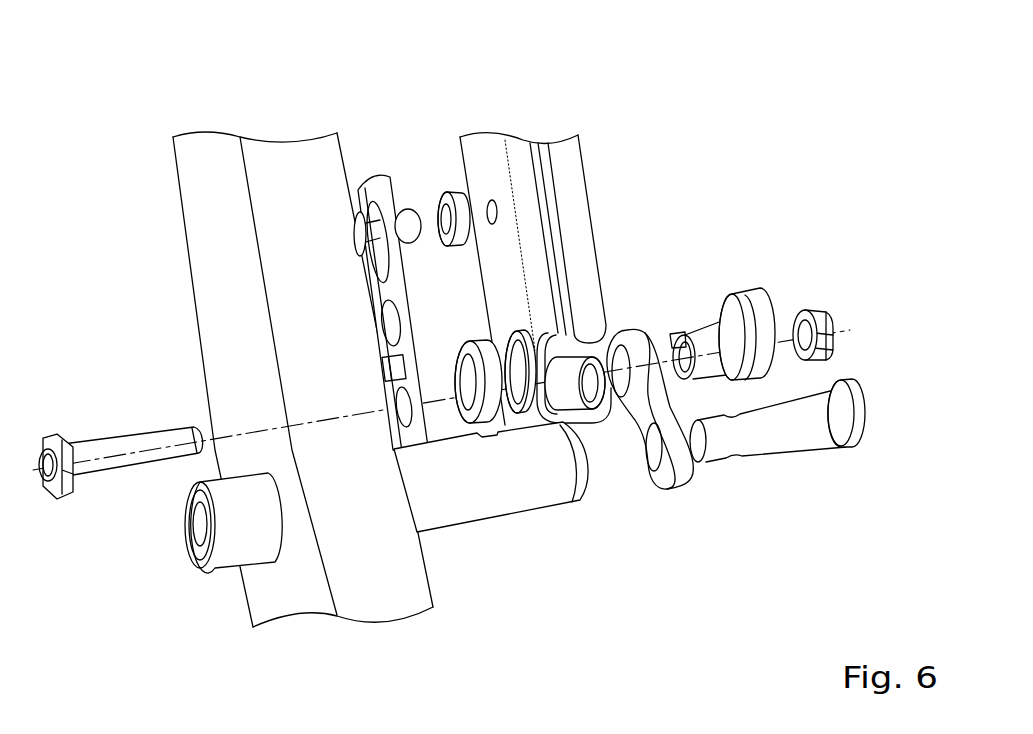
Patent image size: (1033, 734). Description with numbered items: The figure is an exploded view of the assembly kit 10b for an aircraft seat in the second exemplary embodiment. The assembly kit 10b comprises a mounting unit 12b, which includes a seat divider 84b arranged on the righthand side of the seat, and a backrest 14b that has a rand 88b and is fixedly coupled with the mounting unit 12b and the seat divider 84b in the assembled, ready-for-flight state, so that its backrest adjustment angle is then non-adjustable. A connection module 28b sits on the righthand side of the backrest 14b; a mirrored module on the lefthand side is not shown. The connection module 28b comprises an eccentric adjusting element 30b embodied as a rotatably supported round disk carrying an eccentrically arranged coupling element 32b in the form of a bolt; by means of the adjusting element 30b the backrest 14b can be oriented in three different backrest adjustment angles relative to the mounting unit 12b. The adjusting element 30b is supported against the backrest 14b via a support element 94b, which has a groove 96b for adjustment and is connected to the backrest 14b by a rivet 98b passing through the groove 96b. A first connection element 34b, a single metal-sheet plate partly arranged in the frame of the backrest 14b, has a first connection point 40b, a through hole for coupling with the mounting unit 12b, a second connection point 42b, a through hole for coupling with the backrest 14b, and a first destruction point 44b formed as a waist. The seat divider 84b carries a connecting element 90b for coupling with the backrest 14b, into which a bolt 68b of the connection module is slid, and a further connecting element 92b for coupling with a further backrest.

The assembly kit 10b is at (143, 100).
The mounting unit 12b is at (250, 339).
The backrest 14b is at (607, 279).
The connection module 28b is at (735, 360).
The adjusting element 30b is at (777, 317).
The coupling element 32b is at (131, 461).
The first connection element 34b is at (640, 471).
The first connection point 40b is at (649, 477).
The second connection point 42b is at (625, 395).
The first destruction point 44b is at (655, 401).
The bolt 68b is at (783, 432).
The seat divider 84b is at (221, 177).
The rand 88b is at (559, 347).
The connecting element 90b is at (480, 505).
The further connecting element 92b is at (232, 508).
The support element 94b is at (255, 261).
The groove 96b is at (373, 267).
The rivet 98b is at (407, 226).